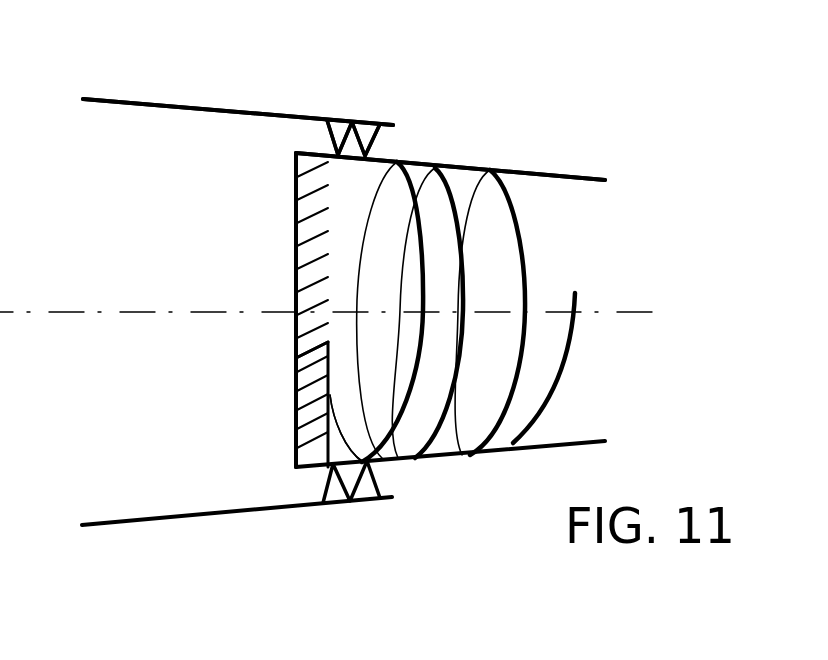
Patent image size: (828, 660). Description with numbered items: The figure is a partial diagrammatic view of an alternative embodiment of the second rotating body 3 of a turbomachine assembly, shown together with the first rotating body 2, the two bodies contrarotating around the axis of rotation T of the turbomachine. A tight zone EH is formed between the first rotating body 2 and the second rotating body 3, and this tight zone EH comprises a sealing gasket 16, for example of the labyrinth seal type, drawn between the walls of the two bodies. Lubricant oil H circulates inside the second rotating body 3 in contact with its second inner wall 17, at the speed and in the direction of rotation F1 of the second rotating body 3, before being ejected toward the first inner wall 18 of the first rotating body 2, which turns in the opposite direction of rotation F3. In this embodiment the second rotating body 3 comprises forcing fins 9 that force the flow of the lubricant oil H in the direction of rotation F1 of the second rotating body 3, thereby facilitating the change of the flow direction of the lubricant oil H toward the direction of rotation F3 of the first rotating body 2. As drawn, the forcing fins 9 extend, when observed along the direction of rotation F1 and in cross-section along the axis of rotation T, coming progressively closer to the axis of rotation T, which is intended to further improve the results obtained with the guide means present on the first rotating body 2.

The first rotating body 2 is at (104, 100).
The first inner wall 18 is at (121, 104).
The second rotating body 3 is at (570, 178).
The second inner wall 17 is at (582, 179).
The sealing gasket 16 is at (380, 480).
The forcing fins 9 is at (304, 228).
The lubricant oil H is at (328, 380).
The axis of rotation T is at (638, 312).
The direction of rotation of the second rotating body F1 is at (329, 394).
The direction of rotation of the first rotating body F3 is at (292, 362).
The tight zone EH is at (354, 86).